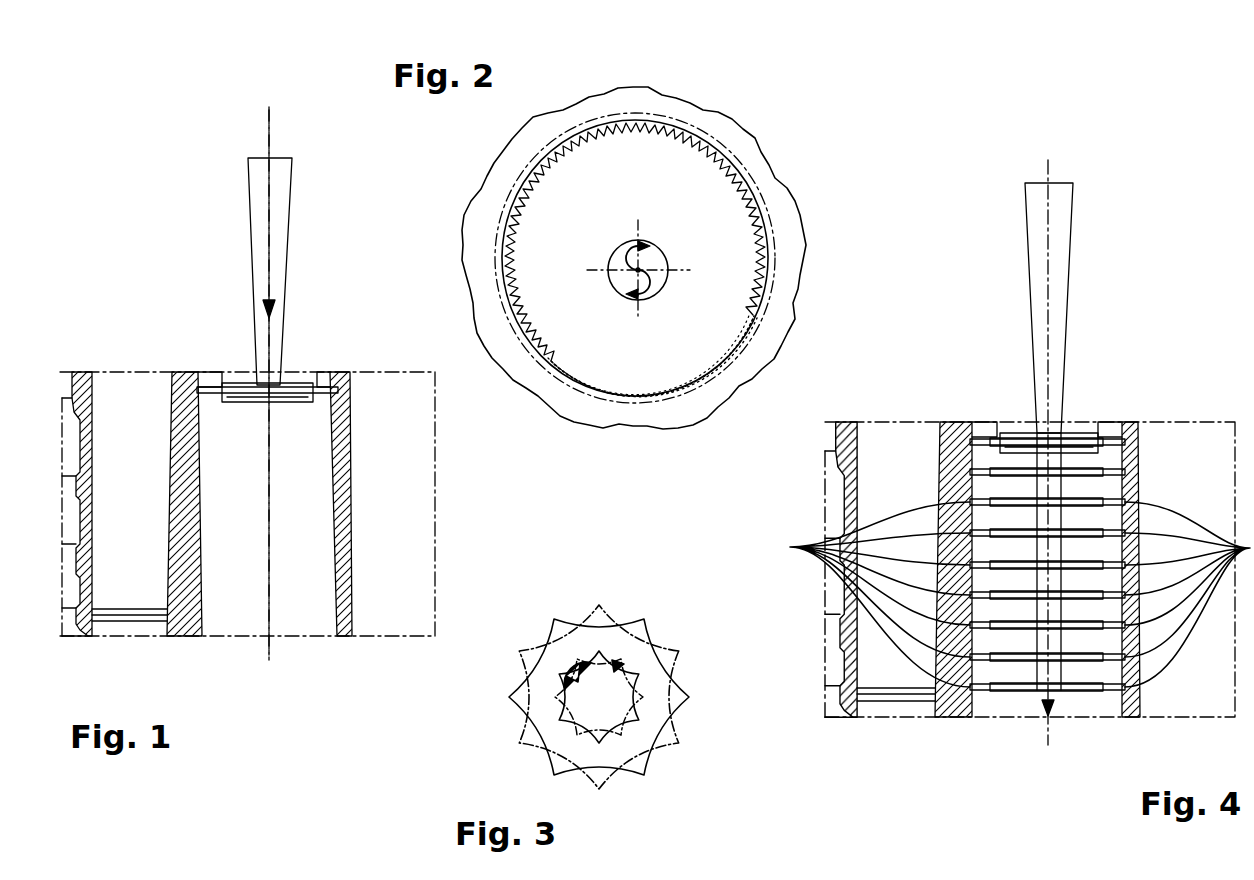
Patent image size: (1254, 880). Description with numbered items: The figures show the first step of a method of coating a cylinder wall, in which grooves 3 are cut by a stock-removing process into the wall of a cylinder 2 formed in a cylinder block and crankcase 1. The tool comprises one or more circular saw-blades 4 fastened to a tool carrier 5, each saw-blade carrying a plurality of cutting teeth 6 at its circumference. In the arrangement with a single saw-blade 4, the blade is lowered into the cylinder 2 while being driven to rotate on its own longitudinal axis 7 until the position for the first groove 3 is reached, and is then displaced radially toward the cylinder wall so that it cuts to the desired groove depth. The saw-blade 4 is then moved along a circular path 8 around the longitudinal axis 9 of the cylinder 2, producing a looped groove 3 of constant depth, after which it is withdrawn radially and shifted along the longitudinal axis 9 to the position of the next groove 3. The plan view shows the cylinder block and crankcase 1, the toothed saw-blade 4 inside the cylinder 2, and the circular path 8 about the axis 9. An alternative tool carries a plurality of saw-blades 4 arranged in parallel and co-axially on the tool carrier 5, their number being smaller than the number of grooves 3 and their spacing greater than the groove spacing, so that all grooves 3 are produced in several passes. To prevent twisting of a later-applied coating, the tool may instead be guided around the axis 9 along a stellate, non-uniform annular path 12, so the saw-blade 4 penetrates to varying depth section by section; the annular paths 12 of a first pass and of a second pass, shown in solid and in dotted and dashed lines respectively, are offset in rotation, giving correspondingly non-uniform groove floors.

In FIG. 1, the cylinder block and crankcase 1 is at (186, 383).
In FIG. 2, the cylinder block and crankcase 1 is at (712, 122).
In FIG. 4, the cylinder block and crankcase 1 is at (955, 420).
In FIG. 1, the cylinder 2 is at (360, 400).
In FIG. 4, the cylinder 2 is at (1152, 470).
In FIG. 1, the grooves 3 is at (200, 385).
In FIG. 2, the grooves 3 is at (738, 162).
In FIG. 4, the grooves 3 is at (986, 364).
In FIG. 1, the circular saw-blade 4 is at (318, 392).
In FIG. 2, the circular saw-blade 4 is at (725, 220).
In FIG. 4, the circular saw-blade 4 is at (1078, 450).
In FIG. 1, the tool carrier 5 is at (277, 226).
In FIG. 4, the tool carrier 5 is at (1058, 265).
In FIG. 2, the cutting teeth 6 is at (520, 216).
In FIG. 1, the longitudinal axis of the saw-blade 7 is at (262, 122).
In FIG. 2, the longitudinal axis of the saw-blade 7 is at (648, 283).
In FIG. 2, the circular path 8 is at (616, 258).
In FIG. 2, the longitudinal axis of the cylinder 9 is at (640, 250).
In FIG. 3, the non-uniform annular path 12 is at (686, 696).